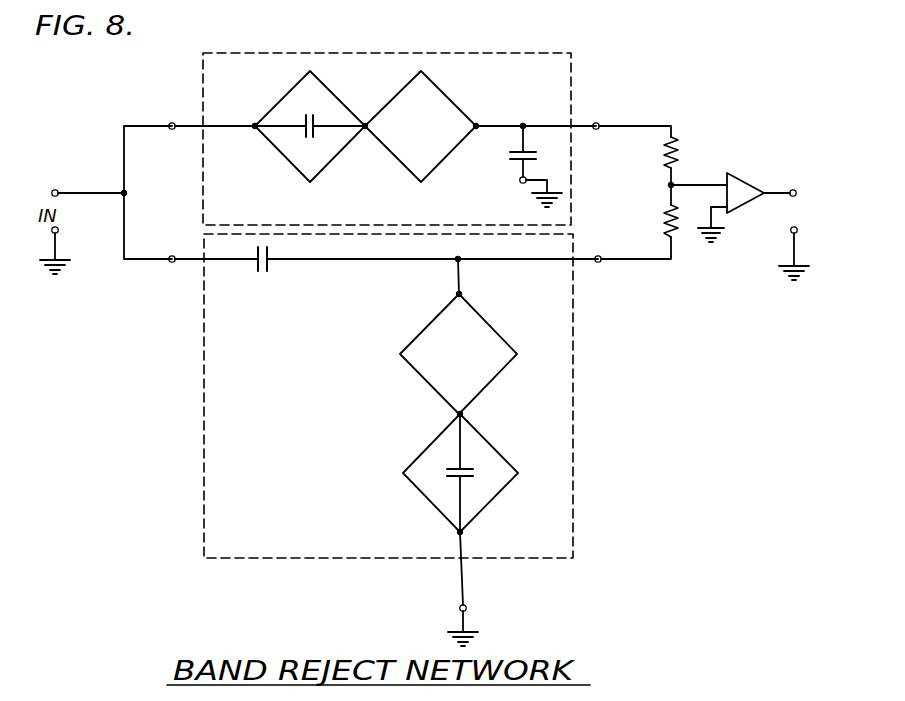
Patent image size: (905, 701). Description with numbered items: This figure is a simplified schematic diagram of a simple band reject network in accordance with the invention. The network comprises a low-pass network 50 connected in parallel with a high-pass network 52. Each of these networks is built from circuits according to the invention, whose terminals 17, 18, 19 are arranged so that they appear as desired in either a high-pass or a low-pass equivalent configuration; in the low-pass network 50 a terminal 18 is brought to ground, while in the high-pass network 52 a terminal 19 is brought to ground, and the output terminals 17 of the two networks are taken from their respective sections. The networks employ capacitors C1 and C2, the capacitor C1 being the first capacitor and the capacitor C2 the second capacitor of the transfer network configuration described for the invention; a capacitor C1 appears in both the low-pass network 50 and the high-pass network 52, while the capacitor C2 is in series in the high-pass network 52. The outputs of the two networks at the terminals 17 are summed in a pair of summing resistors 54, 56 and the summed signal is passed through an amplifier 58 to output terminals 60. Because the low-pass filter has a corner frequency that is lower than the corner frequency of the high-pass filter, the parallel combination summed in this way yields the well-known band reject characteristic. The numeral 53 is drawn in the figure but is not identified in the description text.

The terminal 17 is at (599, 123).
The terminal 18 is at (520, 182).
The terminal 19 is at (460, 608).
The low-pass network 50 is at (577, 78).
The high-pass network 52 is at (579, 325).
The diamond network with capacitor C1 53 is at (421, 295).
The summing resistor 54 is at (469, 101).
The summing resistor 56 is at (667, 216).
The amplifier 58 is at (746, 176).
The output terminals 60 is at (812, 175).
The capacitor C1 is at (310, 113).
The second capacitor C2 is at (262, 273).